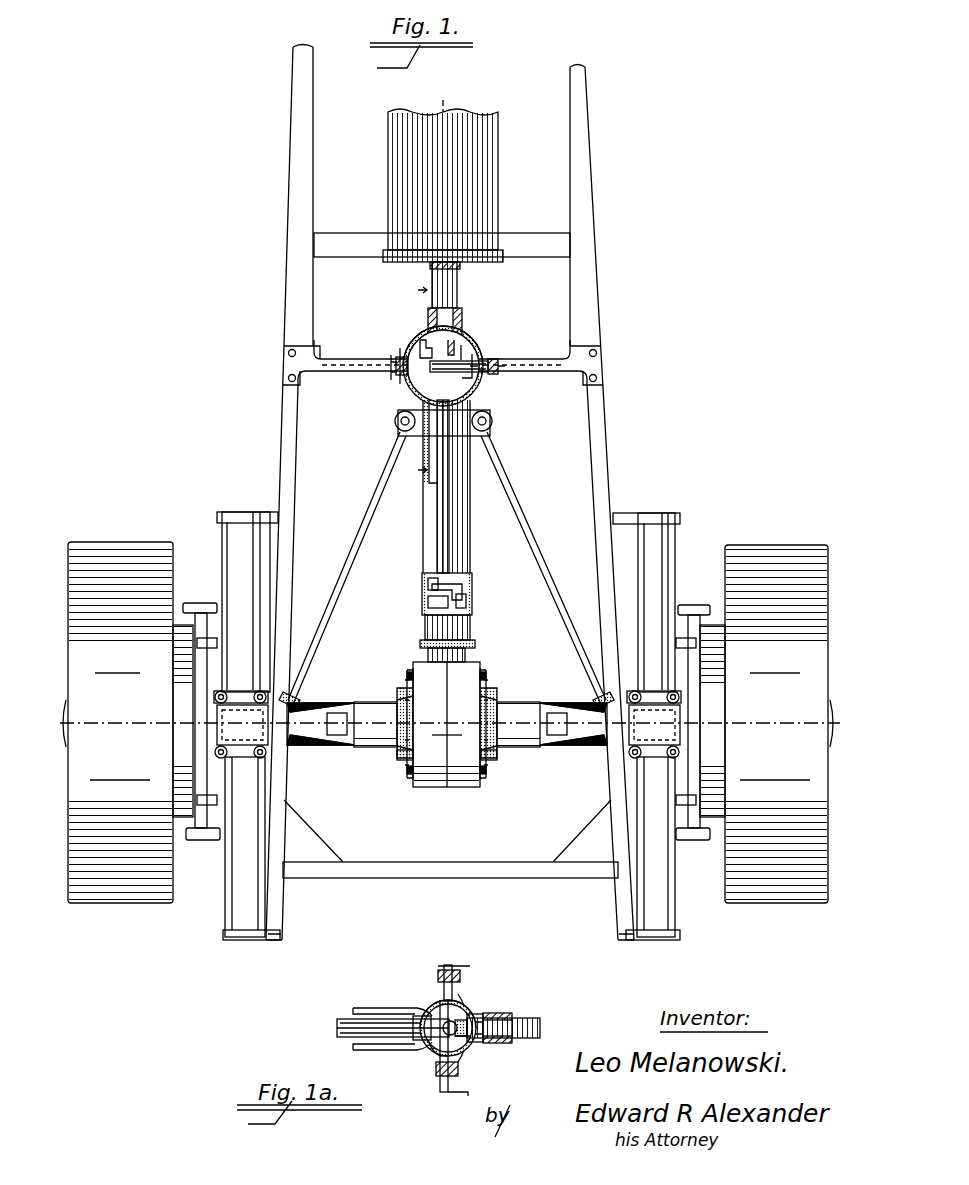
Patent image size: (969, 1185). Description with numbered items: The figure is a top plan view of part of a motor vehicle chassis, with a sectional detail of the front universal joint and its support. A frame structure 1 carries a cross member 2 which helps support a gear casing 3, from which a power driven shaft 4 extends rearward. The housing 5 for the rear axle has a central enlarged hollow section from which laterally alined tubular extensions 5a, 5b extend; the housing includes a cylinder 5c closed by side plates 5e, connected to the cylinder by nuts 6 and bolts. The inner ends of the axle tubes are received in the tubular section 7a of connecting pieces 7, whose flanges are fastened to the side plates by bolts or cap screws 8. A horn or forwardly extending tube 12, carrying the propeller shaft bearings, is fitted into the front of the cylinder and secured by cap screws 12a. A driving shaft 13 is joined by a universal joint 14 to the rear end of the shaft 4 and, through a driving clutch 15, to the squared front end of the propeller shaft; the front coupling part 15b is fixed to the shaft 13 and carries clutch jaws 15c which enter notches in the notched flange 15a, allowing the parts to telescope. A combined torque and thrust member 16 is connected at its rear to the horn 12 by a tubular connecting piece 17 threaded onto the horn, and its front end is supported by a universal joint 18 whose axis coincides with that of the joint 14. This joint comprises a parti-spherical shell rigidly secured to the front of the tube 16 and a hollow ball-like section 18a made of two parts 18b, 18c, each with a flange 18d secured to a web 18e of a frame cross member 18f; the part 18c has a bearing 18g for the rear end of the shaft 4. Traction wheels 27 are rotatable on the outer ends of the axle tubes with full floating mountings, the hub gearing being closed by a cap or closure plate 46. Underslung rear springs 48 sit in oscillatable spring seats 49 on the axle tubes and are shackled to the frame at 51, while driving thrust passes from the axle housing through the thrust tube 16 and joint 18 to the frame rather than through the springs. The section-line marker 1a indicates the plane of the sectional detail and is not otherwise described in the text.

In FIG. 1, the frame structure 1 is at (606, 428).
In FIG. 1, the section line 1a is at (410, 382).
In FIG. 1, the cross member 2 is at (530, 247).
In FIG. 1, the gear casing 3 is at (499, 160).
In FIG. 1, the power driven shaft 4 is at (452, 282).
In FIG. 1A, the power driven shaft 4 is at (530, 1018).
In FIG. 1, the housing for the rear axle structure 5 is at (404, 773).
In FIG. 1, the tubular extension 5a is at (333, 705).
In FIG. 1, the tubular extension 5b is at (568, 704).
In FIG. 1, the cylinder 5c is at (465, 787).
In FIG. 1, the side plate 5e is at (400, 760).
In FIG. 1, the nuts 6 is at (488, 672).
In FIG. 1, the connecting piece 7 is at (399, 702).
In FIG. 1, the tubular section 7a is at (372, 702).
In FIG. 1, the bolts or cap screws 8 is at (408, 672).
In FIG. 1, the horn or forwardly extending tube 12 is at (476, 642).
In FIG. 1, the cap screws 12a is at (468, 655).
In FIG. 1, the driving shaft 13 is at (430, 455).
In FIG. 1A, the driving shaft 13 is at (350, 1022).
In FIG. 1, the universal joint 14 is at (412, 412).
In FIG. 1A, the universal joint 14 is at (470, 1012).
In FIG. 1, the driving clutch or connection 15 is at (470, 575).
In FIG. 1, the notched flange 15a is at (470, 598).
In FIG. 1, the front part of the coupling 15b is at (424, 585).
In FIG. 1, the clutch jaws 15c is at (470, 585).
In FIG. 1, the combined torque and thrust member 16 is at (463, 546).
In FIG. 1, the tubular connecting piece 17 is at (425, 625).
In FIG. 1, the universal joint 18 is at (482, 395).
In FIG. 1A, the universal joint 18 is at (436, 1058).
In FIG. 1, the parti-spherical hollow ball-like section 18a is at (420, 352).
In FIG. 1A, the parti-spherical hollow ball-like section 18a is at (464, 992).
In FIG. 1, the part of the ball-like section 18b is at (483, 380).
In FIG. 1A, the part of the ball-like section 18b is at (428, 1055).
In FIG. 1, the part of the ball-like section 18c is at (492, 362).
In FIG. 1A, the part of the ball-like section 18c is at (478, 1040).
In FIG. 1, the flange 18d is at (398, 362).
In FIG. 1A, the flange 18d is at (444, 976).
In FIG. 1, the web 18e is at (392, 374).
In FIG. 1A, the web 18e is at (448, 966).
In FIG. 1, the frame cross member 18f is at (548, 372).
In FIG. 1, the bearing 18g is at (462, 322).
In FIG. 1A, the bearing 18g is at (500, 1014).
In FIG. 1, the traction wheel 27 is at (112, 908).
In FIG. 1, the cap or closure plate 46 is at (70, 730).
In FIG. 1, the rear springs 48 is at (232, 915).
In FIG. 1, the oscillatable spring seats 49 is at (278, 788).
In FIG. 1, the shackle 51 is at (233, 512).